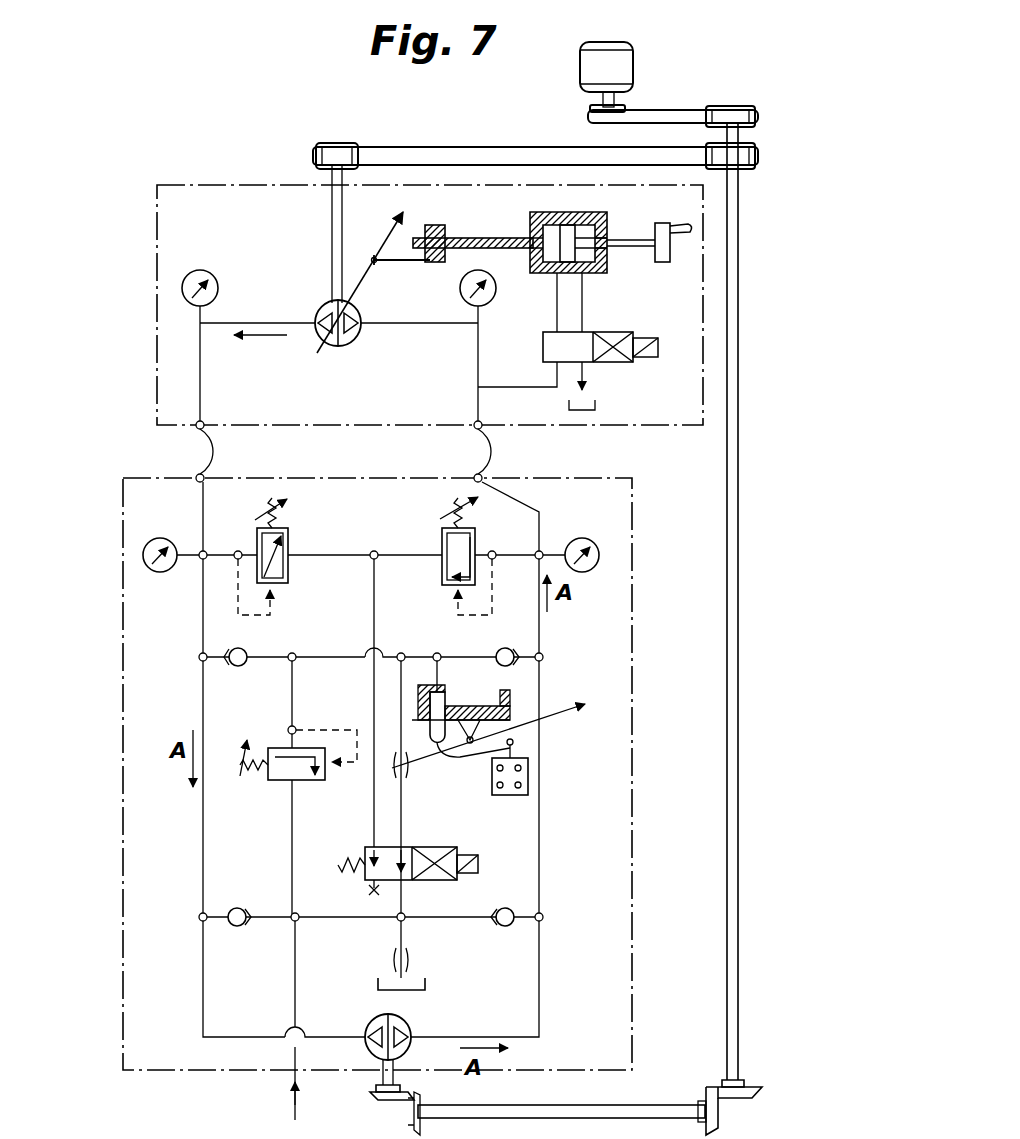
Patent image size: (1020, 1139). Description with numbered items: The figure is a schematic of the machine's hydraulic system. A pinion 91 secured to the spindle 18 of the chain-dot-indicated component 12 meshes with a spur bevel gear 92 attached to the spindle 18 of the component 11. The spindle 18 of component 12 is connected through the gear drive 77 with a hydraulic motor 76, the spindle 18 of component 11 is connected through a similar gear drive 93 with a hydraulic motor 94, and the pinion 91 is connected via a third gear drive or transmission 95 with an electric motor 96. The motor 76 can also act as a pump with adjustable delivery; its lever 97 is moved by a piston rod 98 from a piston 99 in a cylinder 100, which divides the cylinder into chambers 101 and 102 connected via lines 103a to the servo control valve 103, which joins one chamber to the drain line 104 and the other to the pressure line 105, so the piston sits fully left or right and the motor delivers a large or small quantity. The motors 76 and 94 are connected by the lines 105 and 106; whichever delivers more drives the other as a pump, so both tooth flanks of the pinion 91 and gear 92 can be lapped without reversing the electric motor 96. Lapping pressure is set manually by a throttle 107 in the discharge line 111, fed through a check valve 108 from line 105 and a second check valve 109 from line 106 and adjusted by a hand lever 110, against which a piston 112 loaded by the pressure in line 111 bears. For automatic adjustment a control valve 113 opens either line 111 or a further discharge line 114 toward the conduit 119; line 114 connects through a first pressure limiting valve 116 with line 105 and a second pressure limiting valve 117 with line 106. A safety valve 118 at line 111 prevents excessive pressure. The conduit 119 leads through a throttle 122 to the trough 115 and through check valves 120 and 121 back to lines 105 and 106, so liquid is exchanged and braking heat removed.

The component 11 is at (167, 476).
The component 12 is at (190, 184).
The spindle 18 is at (710, 1023).
The hydraulic motor 76 is at (325, 304).
The gear drive 77 is at (517, 147).
The pinion 91 is at (725, 1085).
The spur bevel gear 92 is at (712, 1100).
The gear drive 93 is at (380, 1076).
The hydraulic motor 94 is at (411, 1032).
The third gear drive or transmission 95 is at (692, 110).
The electric motor 96 is at (632, 70).
The lever 97 is at (372, 250).
The piston rod 98 is at (482, 245).
The piston 99 is at (586, 258).
The cylinder 100 is at (600, 215).
The chamber 101 is at (557, 225).
The chamber 102 is at (597, 262).
The electrically actuatable control valve 103 is at (640, 368).
The lines 103a is at (580, 316).
The discharge or drain line 104 is at (588, 378).
The pressure line 105 is at (477, 367).
The conduit or line 106 is at (200, 387).
The throttle 107 is at (410, 767).
The check valve 108 is at (515, 652).
The second check valve 109 is at (231, 665).
The hand lever 110 is at (547, 703).
The discharge or outflow line 111 is at (302, 650).
The piston 112 is at (510, 748).
The electrically actuatable control valve 113 is at (480, 867).
The discharge line 114 is at (374, 592).
The vat or trough 115 is at (432, 990).
The first pressure limiting valve 116 is at (477, 523).
The second pressure limiting valve 117 is at (283, 540).
The safety valve 118 is at (268, 778).
The conduit or line 119 is at (330, 938).
The check valve 120 is at (515, 925).
The check valve 121 is at (238, 924).
The throttle 122 is at (412, 962).